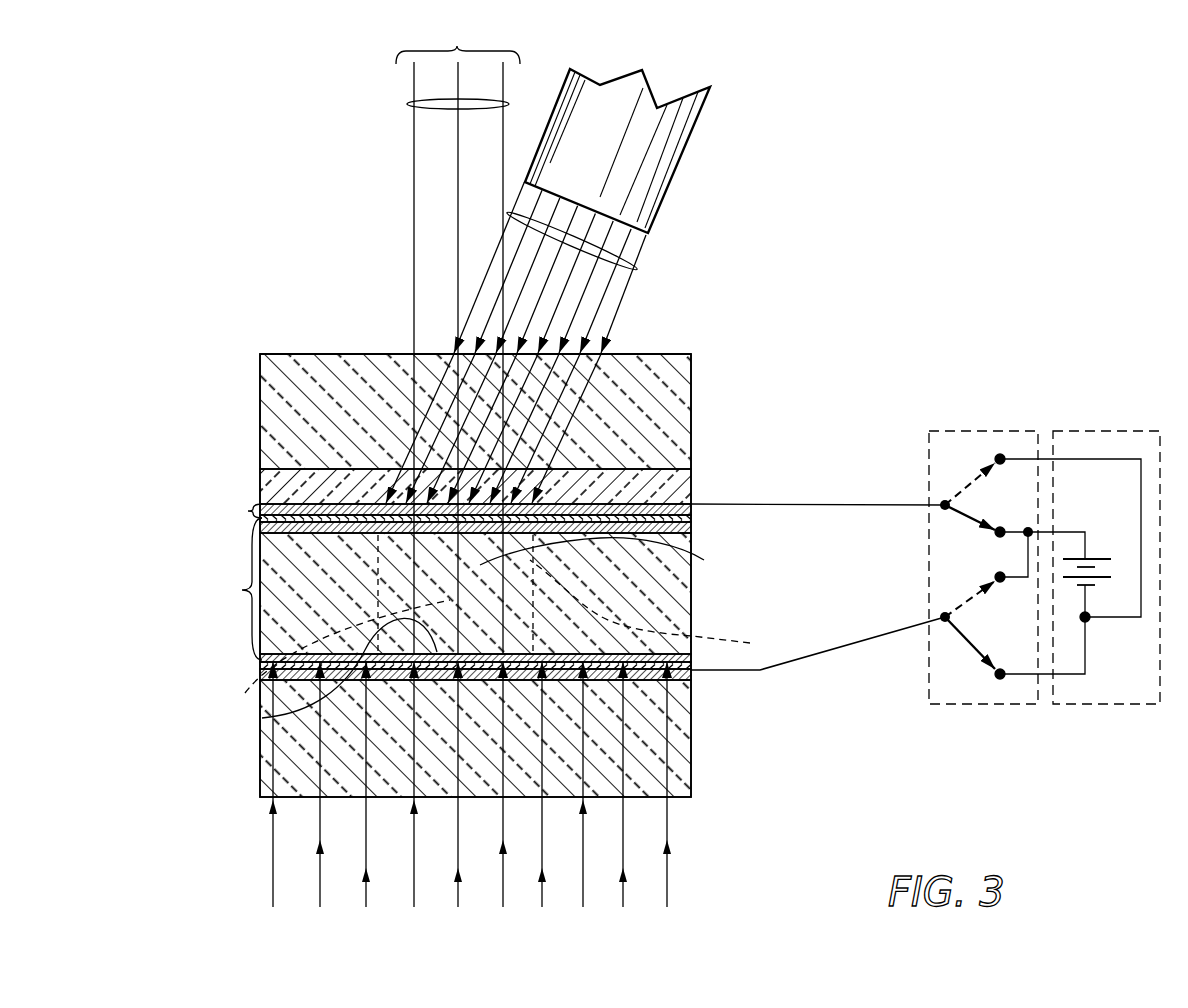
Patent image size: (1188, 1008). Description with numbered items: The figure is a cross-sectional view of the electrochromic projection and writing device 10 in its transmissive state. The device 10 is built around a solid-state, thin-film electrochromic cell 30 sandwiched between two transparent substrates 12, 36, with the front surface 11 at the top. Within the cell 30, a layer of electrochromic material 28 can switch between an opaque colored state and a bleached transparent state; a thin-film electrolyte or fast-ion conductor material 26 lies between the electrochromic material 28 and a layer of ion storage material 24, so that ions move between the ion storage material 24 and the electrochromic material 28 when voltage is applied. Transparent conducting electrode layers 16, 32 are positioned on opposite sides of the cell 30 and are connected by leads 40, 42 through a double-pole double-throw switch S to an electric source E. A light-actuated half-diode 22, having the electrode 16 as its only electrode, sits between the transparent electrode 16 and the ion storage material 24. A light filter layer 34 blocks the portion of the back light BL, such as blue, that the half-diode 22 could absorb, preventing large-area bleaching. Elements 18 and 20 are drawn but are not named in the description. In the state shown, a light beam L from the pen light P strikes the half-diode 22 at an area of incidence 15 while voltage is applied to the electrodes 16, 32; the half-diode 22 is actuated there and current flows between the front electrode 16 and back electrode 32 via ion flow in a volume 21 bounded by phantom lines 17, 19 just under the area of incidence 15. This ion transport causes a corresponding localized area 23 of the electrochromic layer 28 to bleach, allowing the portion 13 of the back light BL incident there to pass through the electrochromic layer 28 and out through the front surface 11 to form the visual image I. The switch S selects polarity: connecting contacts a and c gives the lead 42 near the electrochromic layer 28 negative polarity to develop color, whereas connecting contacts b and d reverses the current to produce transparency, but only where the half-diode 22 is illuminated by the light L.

The electrochromic projection and writing device 10 is at (158, 352).
The front surface 11 is at (326, 350).
The transparent substrate 12 is at (692, 375).
The transmitted portions of the front surface 13 is at (425, 107).
The area of incidence 15 is at (560, 437).
The transparent conducting electrode layer 16 is at (692, 483).
The phantom line 17 is at (333, 653).
The first electrochromic layer 18 is at (692, 507).
The phantom line 19 is at (656, 608).
The electrolyte layer 20 is at (692, 515).
The volume 21 is at (608, 556).
The light-actuated half-diode 22 is at (249, 511).
The localized area 23 is at (326, 676).
The ion storage material 24 is at (692, 526).
The electrolyte material 26 is at (692, 579).
The electrochromic material 28 is at (692, 655).
The electrochromic cell 30 is at (243, 590).
The transparent conducting electrode layer 32 is at (692, 663).
The light filter layer 34 is at (696, 676).
The transparent substrate 36 is at (692, 752).
The lead 40 is at (917, 504).
The lead 42 is at (888, 634).
The image I is at (458, 44).
The pen light P is at (678, 165).
The light beam L is at (640, 268).
The switch S is at (935, 431).
The electric source E is at (1128, 431).
The switch contact a is at (1000, 532).
The switch contact b is at (1000, 459).
The switch contact c is at (1000, 674).
The switch contact d is at (1000, 575).
The back light BL is at (623, 855).